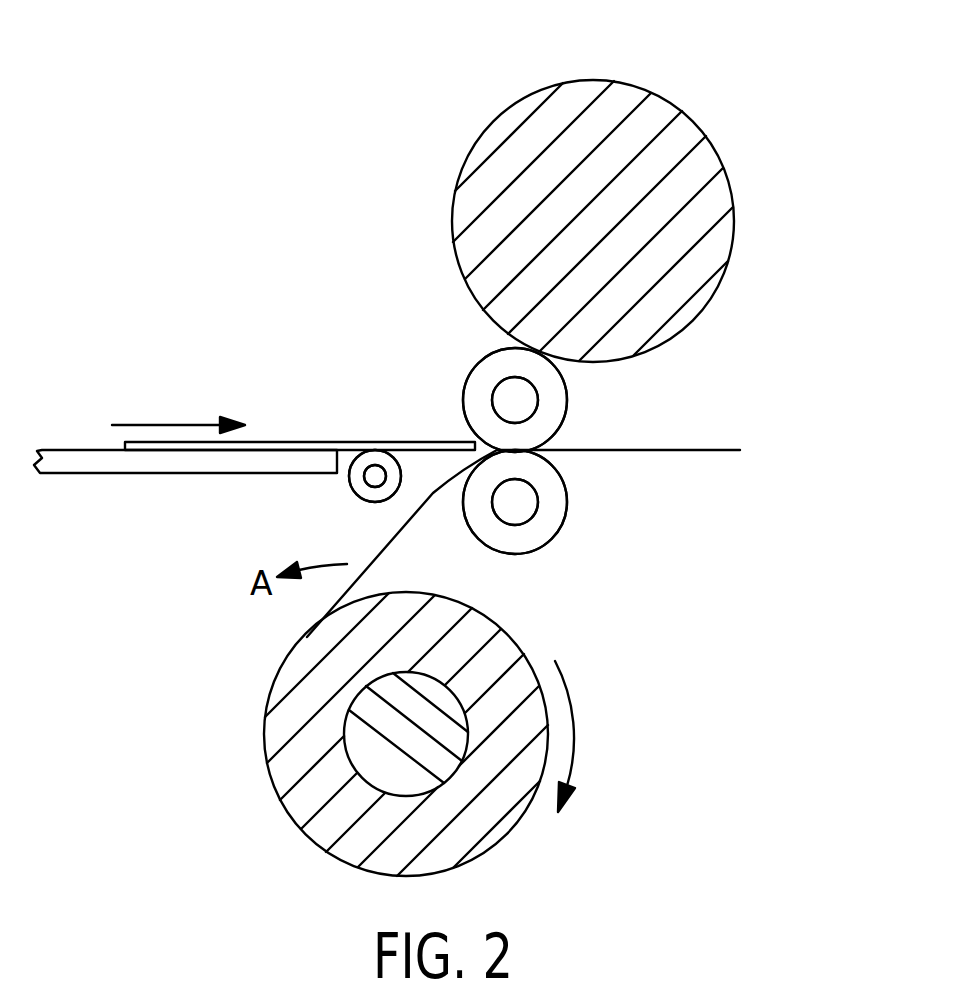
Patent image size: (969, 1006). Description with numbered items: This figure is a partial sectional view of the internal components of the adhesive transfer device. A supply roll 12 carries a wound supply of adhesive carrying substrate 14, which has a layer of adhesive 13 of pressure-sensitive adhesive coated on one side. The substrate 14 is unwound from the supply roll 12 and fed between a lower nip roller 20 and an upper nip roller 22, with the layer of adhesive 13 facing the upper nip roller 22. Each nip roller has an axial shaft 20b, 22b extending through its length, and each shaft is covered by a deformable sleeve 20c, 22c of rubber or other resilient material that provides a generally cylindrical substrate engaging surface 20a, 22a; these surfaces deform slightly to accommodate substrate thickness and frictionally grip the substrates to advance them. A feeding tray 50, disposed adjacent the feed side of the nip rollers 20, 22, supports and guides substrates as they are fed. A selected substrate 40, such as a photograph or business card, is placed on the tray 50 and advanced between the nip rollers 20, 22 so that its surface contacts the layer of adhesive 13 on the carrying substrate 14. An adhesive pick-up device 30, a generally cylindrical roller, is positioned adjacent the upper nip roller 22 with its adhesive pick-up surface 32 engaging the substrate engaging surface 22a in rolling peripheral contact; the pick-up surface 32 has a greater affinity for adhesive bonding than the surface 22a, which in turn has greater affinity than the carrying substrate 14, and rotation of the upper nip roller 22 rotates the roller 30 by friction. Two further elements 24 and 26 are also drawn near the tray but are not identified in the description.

The supply roll 12 is at (349, 734).
The layer of adhesive 13 is at (265, 708).
The adhesive carrying substrate 14 is at (310, 612).
The nip roller 20 is at (611, 550).
The substrate engaging surface 20a is at (563, 475).
The axial shaft 20b is at (522, 502).
The deformable sleeve 20c is at (538, 527).
The upper nip roller 22 is at (656, 383).
The substrate engaging surface 22a is at (567, 383).
The axial shaft 22b is at (522, 403).
The deformable sleeve 22c is at (538, 427).
The guide roller 24 is at (332, 510).
The roller core 26 is at (350, 484).
The adhesive pick-up device 30 is at (627, 184).
The adhesive pick-up surface 32 is at (623, 82).
The selected substrate 40 is at (353, 442).
The feeding tray 50 is at (85, 476).